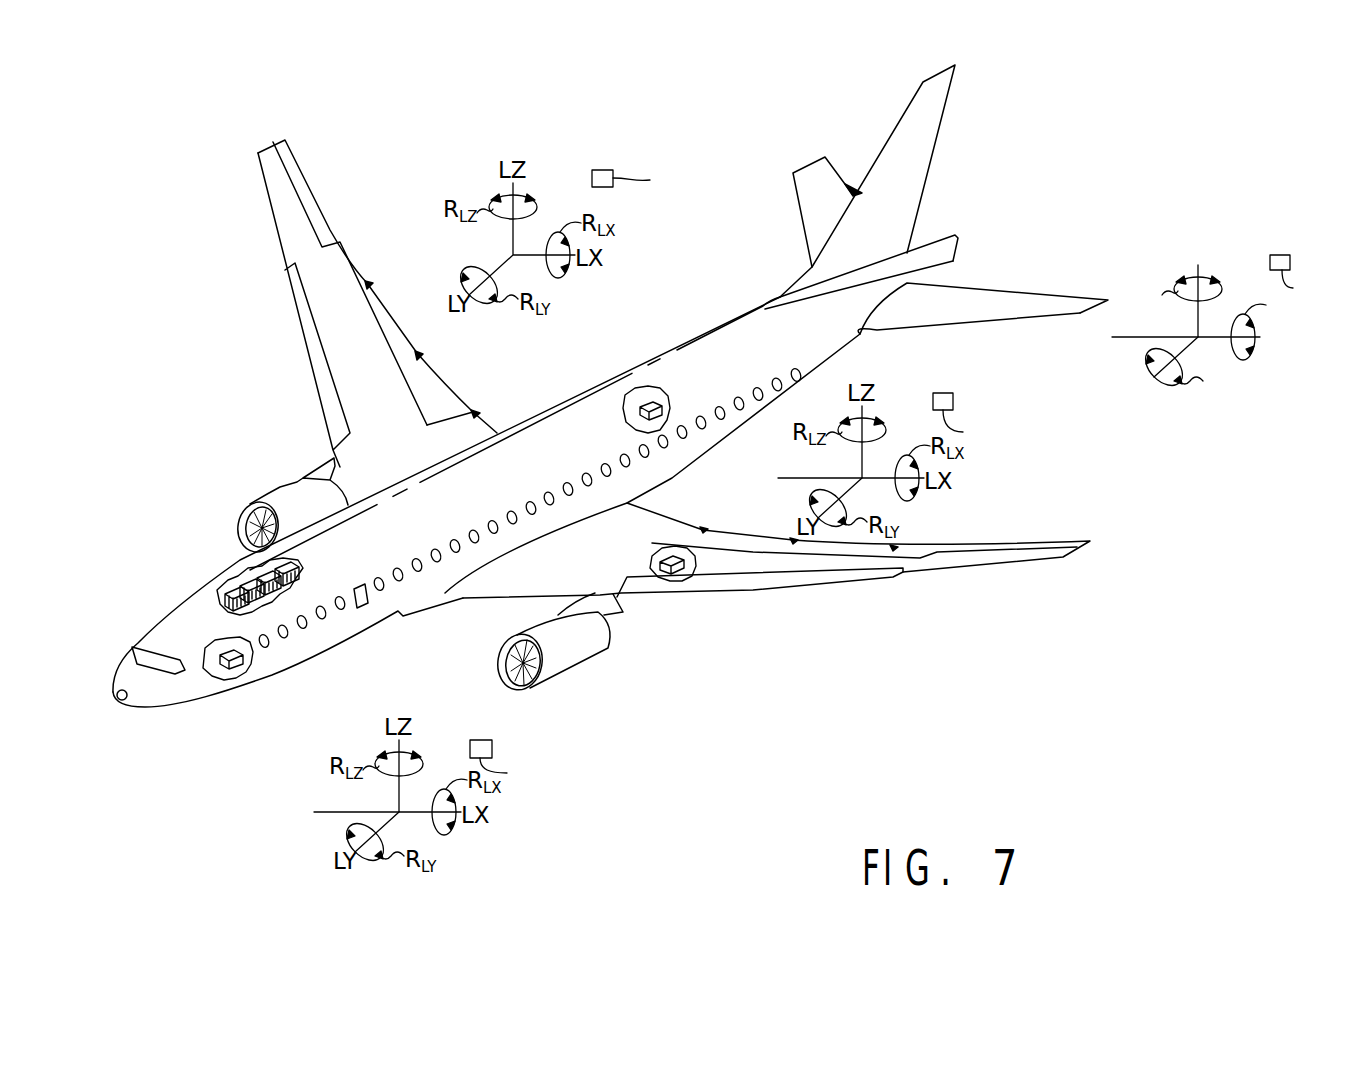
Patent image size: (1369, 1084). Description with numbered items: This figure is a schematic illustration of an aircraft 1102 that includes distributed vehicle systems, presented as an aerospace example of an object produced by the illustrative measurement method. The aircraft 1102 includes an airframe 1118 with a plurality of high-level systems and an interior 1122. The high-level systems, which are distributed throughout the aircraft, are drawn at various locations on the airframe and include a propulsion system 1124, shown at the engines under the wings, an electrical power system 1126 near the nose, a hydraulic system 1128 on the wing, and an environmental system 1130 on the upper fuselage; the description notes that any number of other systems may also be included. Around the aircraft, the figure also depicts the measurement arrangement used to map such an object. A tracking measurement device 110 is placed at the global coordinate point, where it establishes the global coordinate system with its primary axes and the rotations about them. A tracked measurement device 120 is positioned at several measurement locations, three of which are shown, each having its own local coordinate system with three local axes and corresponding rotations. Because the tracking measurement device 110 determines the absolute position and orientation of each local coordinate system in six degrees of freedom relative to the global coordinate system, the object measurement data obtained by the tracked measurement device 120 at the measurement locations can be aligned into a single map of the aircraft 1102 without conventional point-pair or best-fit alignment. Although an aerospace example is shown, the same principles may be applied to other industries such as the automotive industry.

The aircraft 1102 is at (265, 297).
The airframe 1118 is at (255, 588).
The interior 1122 is at (295, 592).
The propulsion system 1124 is at (280, 495).
The electrical power system 1126 is at (227, 650).
The hydraulic system 1128 is at (692, 566).
The environmental system 1130 is at (648, 400).
The tracked measurement device 120 is at (603, 169).
The tracking measurement device 110 is at (1278, 255).